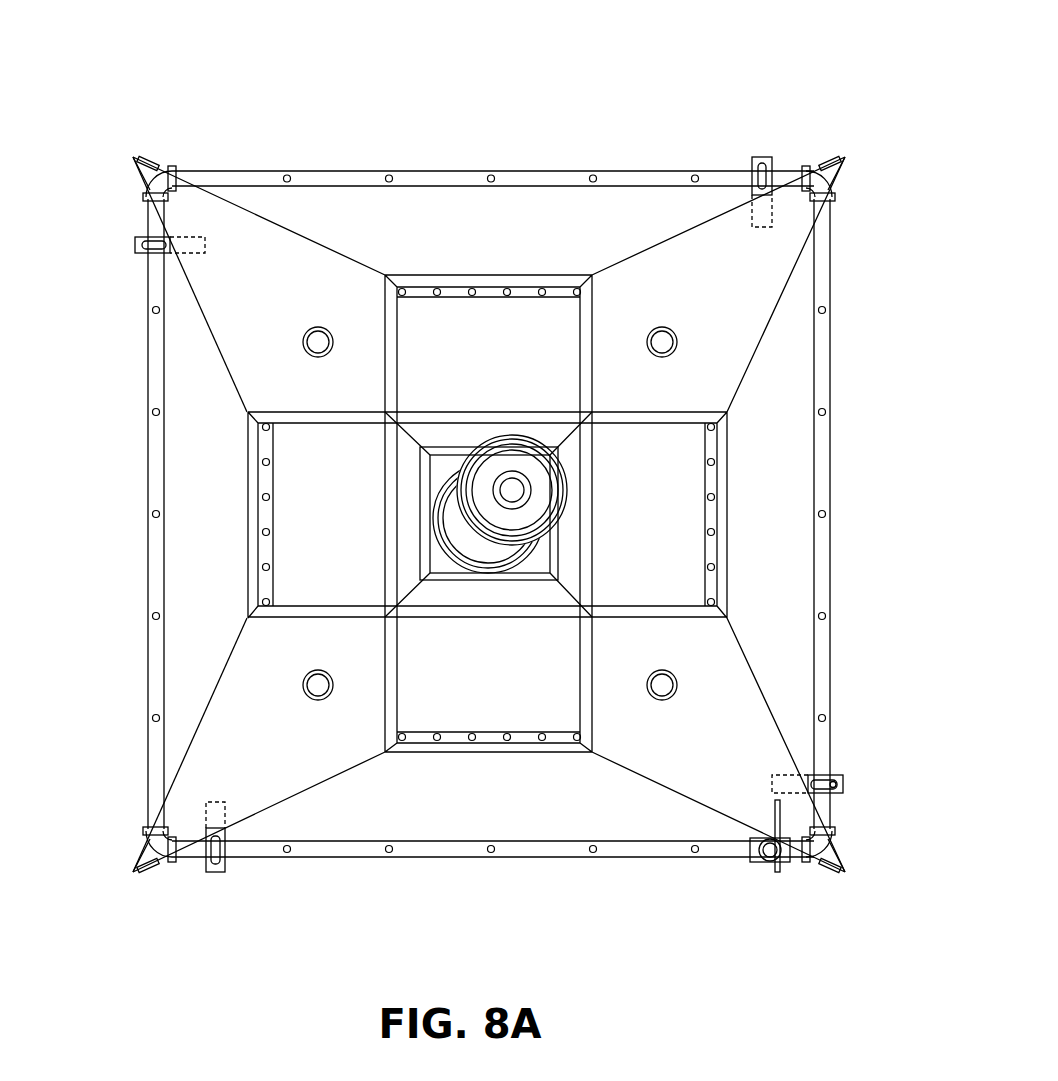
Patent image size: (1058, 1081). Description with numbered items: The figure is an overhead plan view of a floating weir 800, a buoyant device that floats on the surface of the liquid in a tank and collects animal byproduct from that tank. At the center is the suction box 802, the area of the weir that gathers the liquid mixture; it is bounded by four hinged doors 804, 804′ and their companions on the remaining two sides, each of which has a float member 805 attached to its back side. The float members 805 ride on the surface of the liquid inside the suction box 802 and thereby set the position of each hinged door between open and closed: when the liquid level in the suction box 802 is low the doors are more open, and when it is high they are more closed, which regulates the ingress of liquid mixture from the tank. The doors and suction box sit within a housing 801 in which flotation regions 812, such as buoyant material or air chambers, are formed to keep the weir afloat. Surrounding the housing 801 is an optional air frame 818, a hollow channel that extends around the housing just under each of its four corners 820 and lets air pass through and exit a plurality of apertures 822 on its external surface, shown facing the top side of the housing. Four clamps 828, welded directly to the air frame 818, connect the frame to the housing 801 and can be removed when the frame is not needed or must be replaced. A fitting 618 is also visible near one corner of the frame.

The floating weir 800 is at (97, 150).
The housing 801 is at (232, 657).
The suction box 802 is at (693, 580).
The hinged door 804 is at (727, 523).
The hinged door 804′ is at (433, 277).
The float member 805 is at (225, 723).
The flotation region 812 is at (690, 290).
The air frame 818 is at (823, 360).
The corner 820 is at (136, 154).
The apertures 822 is at (830, 515).
The clamp 828 is at (750, 162).
The fitting 618 is at (765, 868).